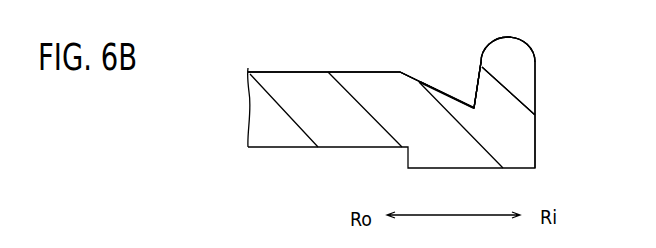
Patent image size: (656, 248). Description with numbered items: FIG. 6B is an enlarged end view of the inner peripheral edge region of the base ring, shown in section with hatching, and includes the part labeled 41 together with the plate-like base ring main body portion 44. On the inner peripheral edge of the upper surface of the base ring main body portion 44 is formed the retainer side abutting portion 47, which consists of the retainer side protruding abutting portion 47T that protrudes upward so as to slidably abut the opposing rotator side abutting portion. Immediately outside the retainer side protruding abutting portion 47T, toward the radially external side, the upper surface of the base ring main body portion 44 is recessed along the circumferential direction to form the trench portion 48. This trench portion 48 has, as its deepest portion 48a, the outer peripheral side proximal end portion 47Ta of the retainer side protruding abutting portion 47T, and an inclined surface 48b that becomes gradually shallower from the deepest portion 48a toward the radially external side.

The stator core 41 is at (318, 160).
The base ring main body portion 44 is at (279, 71).
The retainer side abutting portion 47 is at (528, 41).
The retainer side protruding abutting portion 47T is at (528, 41).
The outer peripheral side proximal end portion 47Ta is at (473, 106).
The trench portion 48 is at (430, 57).
The deepest portion 48a is at (473, 106).
The inclined surface 48b is at (422, 82).